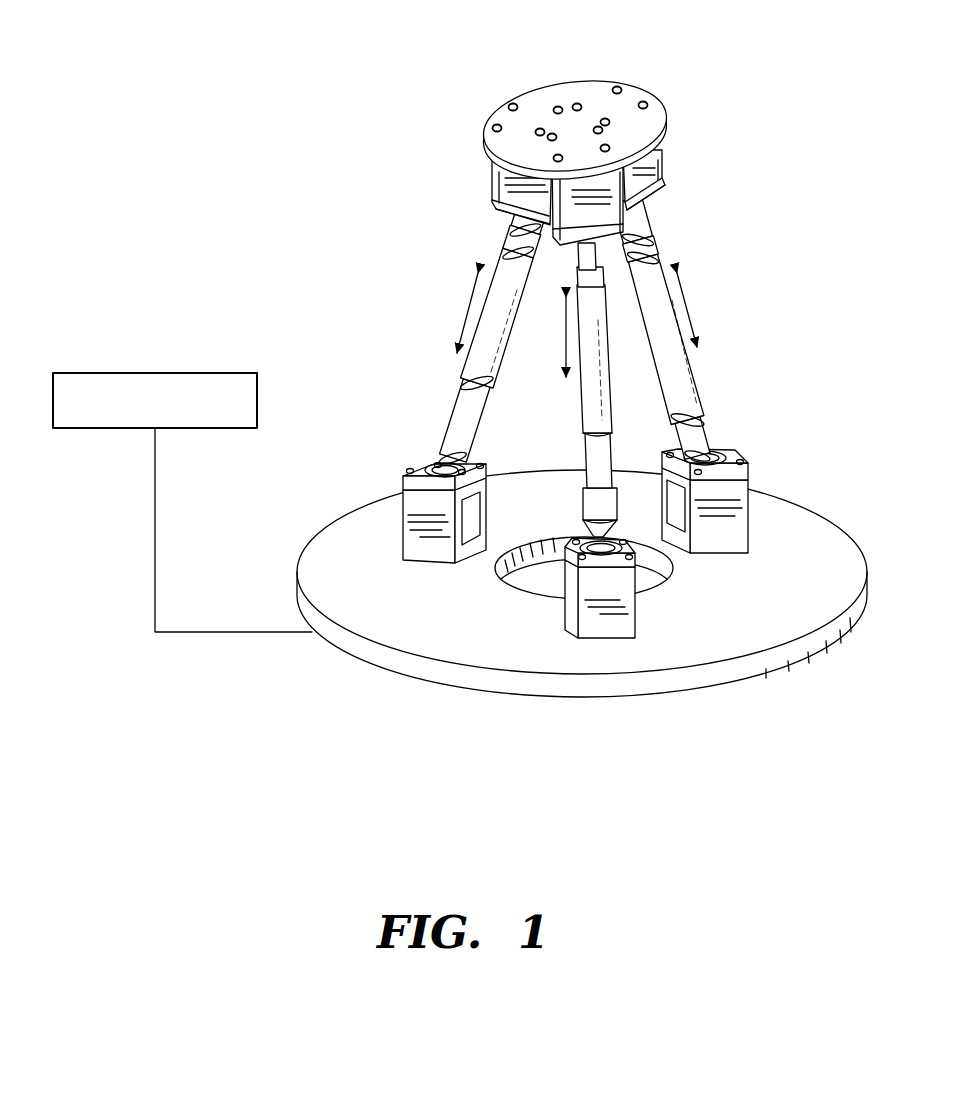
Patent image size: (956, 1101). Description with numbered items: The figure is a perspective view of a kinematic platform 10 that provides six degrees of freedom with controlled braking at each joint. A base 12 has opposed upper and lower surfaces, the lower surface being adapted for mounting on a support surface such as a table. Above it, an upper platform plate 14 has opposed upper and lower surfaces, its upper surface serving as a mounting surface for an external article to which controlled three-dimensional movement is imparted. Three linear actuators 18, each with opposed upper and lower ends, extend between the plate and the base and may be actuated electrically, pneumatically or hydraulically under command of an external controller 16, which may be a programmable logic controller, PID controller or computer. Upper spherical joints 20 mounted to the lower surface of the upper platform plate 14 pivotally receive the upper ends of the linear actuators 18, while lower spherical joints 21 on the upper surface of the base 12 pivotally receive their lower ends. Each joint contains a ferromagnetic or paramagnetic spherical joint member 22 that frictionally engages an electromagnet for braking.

The kinematic platform 10 is at (240, 97).
The base 12 is at (335, 545).
The upper platform plate 14 is at (535, 103).
The controller 16 is at (67, 373).
The linear actuator 18 is at (500, 258).
The upper spherical joint 20 is at (490, 172).
The lower spherical joint 21 is at (405, 500).
The spherical joint member 22 is at (425, 462).